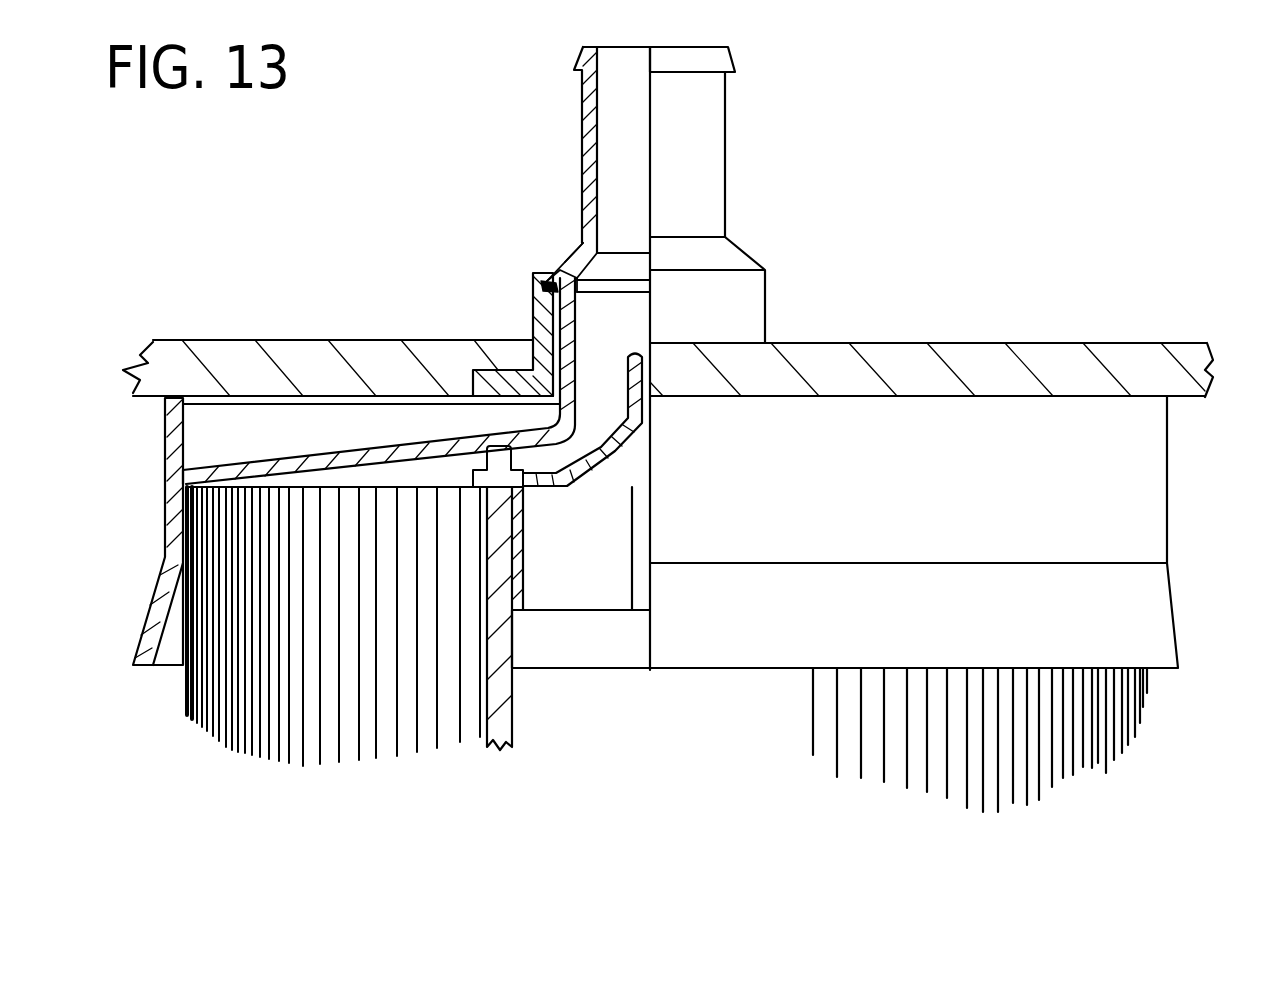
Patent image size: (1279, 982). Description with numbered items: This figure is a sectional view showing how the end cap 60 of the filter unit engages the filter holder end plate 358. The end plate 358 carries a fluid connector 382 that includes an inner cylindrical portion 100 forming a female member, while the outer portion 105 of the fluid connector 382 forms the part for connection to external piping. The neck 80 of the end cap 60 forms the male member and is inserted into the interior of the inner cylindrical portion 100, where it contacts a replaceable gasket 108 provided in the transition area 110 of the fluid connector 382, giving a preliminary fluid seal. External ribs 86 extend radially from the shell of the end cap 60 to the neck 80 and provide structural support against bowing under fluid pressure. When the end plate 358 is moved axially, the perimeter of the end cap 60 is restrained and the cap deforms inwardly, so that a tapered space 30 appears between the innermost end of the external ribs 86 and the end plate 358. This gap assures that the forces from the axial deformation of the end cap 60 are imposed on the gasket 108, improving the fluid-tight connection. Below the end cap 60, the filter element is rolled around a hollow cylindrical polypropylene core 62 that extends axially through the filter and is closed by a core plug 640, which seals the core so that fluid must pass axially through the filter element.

The outer portion 105 is at (728, 160).
The fluid connector 382 is at (765, 283).
The end plate 358 is at (1010, 343).
The end cap 60 is at (1168, 468).
The core plug 640 is at (631, 358).
The tapered space 30 is at (450, 403).
The external ribs 86 is at (334, 402).
The inner cylindrical portion 100 is at (541, 332).
The neck 80 is at (548, 300).
The gasket 108 is at (556, 276).
The transition area 110 is at (572, 262).
The core 62 is at (513, 724).